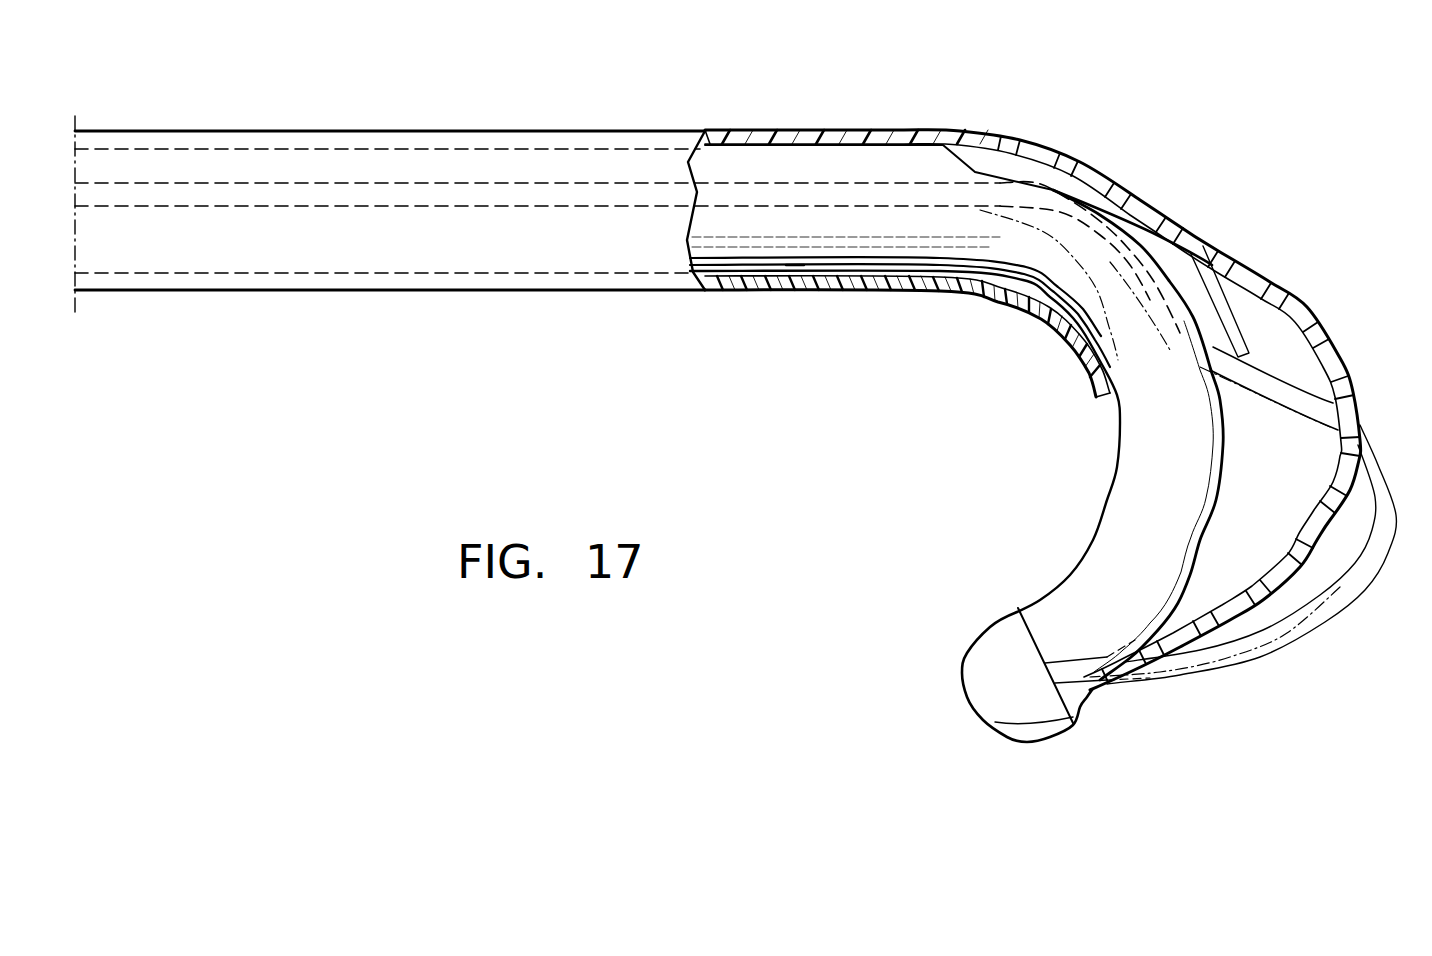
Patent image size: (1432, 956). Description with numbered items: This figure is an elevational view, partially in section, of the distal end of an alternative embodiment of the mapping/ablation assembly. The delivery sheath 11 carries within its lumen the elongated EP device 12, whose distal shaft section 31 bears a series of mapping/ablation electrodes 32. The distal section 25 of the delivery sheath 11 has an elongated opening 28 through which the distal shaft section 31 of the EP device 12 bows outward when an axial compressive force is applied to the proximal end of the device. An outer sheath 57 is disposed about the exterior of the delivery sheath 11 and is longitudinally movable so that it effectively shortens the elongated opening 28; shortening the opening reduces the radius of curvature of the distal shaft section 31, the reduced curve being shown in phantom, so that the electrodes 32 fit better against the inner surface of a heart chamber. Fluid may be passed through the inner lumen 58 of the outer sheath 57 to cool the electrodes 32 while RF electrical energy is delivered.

The delivery sheath 11 is at (790, 158).
The elongated EP device 12 is at (1307, 307).
The distal section of the delivery sheath 25 is at (1120, 423).
The elongated opening 28 is at (1224, 470).
The distal shaft section of the EP device 31 is at (1355, 392).
The mapping/ablation electrodes 32 is at (1240, 262).
The outer sheath 57 is at (1025, 139).
The inner lumen of the outer sheath 58 is at (789, 272).